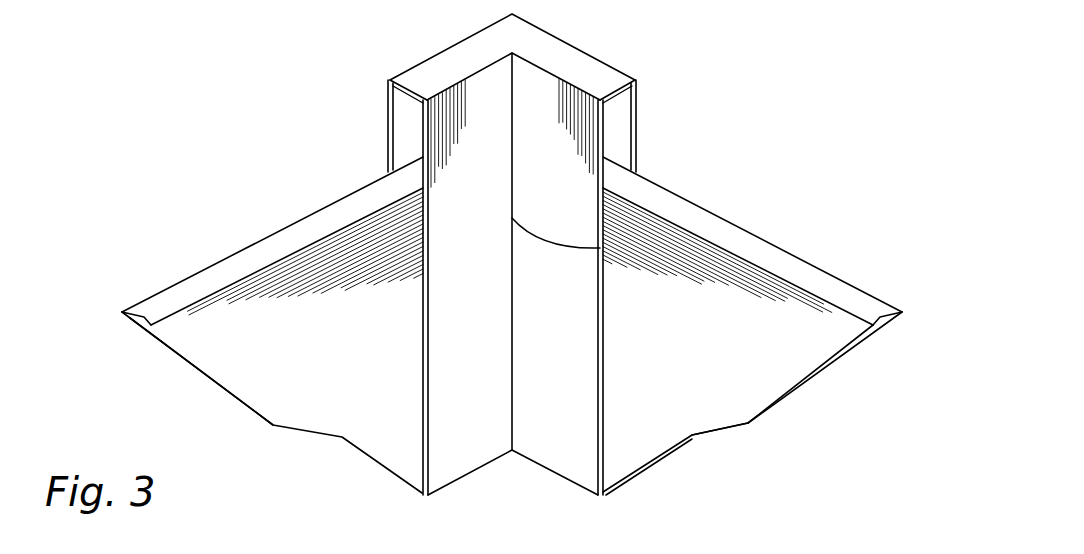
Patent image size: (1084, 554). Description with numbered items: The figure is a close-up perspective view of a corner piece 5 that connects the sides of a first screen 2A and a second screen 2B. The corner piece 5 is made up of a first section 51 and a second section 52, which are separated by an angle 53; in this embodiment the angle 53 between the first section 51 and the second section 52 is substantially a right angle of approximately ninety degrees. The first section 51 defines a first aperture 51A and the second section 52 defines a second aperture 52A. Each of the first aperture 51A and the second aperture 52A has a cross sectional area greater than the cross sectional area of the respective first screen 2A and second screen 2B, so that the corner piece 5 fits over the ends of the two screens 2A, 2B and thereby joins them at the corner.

The corner piece 5 is at (623, 25).
The first section 51 is at (607, 82).
The first aperture 51A is at (623, 138).
The second section 52 is at (418, 80).
The second aperture 52A is at (407, 143).
The angle 53 is at (600, 248).
The first screen 2A is at (837, 290).
The second screen 2B is at (192, 285).